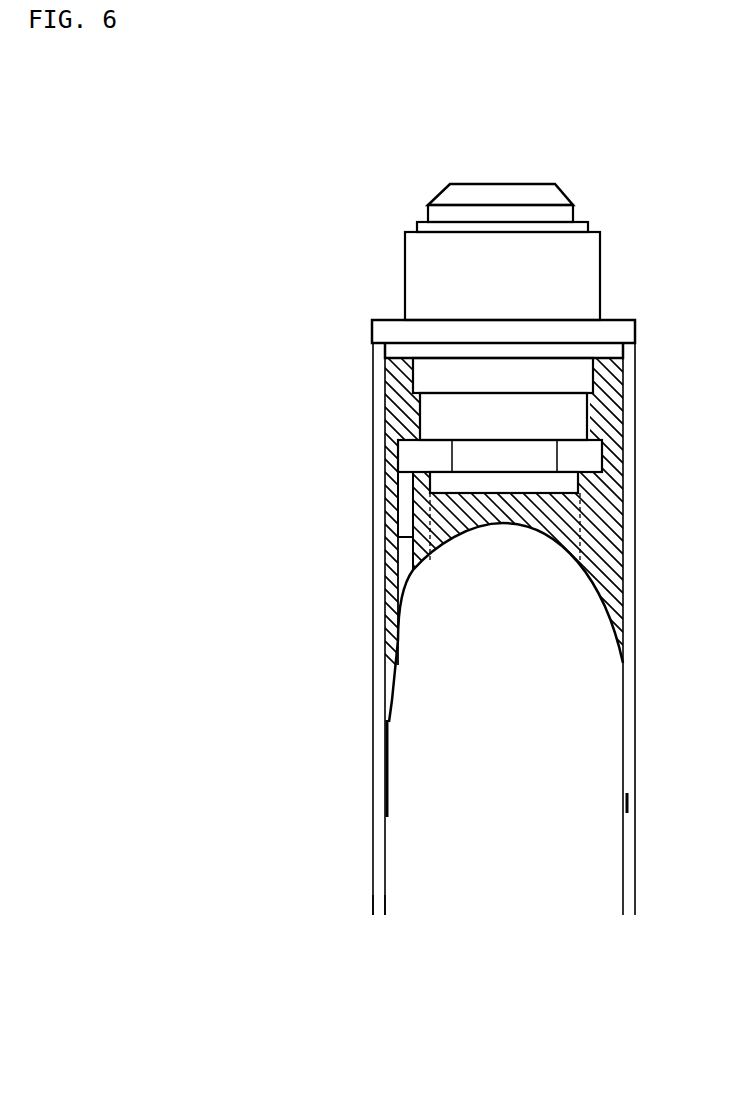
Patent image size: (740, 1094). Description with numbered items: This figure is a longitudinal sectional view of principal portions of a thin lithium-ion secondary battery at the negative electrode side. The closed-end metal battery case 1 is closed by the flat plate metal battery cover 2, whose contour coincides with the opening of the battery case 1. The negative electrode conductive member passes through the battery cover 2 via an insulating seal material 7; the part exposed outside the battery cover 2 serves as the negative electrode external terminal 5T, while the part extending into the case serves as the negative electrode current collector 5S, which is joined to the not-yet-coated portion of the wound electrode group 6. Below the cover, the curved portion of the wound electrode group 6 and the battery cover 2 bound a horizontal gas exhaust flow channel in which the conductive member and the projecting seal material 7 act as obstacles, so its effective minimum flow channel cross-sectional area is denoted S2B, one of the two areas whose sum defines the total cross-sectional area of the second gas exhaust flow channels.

The battery case 1 is at (373, 635).
The battery cover 2 is at (610, 310).
The negative electrode external terminal 5T is at (488, 193).
The negative electrode current collector 5S is at (405, 498).
The minimum flow channel cross-sectional area S2B is at (388, 381).
The wound electrode group 6 is at (443, 867).
The insulating seal material 7 is at (455, 347).